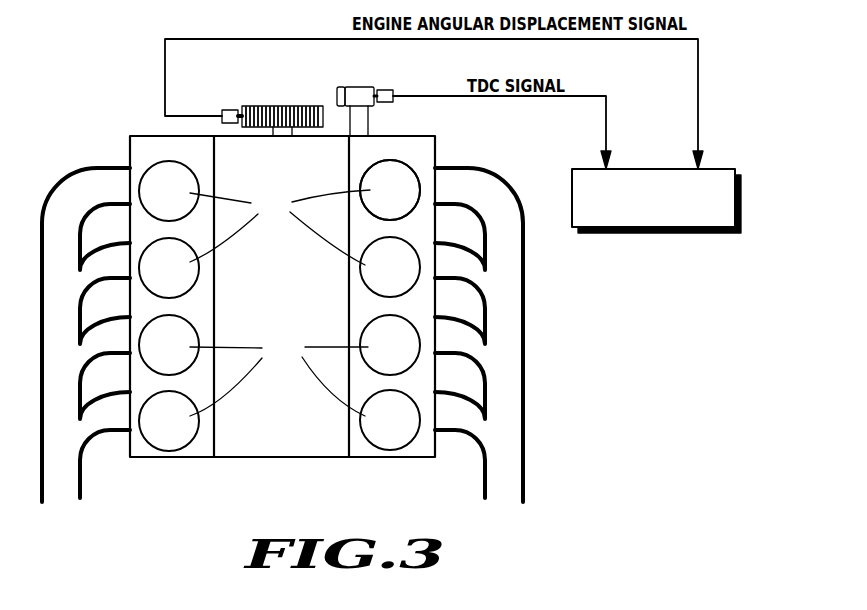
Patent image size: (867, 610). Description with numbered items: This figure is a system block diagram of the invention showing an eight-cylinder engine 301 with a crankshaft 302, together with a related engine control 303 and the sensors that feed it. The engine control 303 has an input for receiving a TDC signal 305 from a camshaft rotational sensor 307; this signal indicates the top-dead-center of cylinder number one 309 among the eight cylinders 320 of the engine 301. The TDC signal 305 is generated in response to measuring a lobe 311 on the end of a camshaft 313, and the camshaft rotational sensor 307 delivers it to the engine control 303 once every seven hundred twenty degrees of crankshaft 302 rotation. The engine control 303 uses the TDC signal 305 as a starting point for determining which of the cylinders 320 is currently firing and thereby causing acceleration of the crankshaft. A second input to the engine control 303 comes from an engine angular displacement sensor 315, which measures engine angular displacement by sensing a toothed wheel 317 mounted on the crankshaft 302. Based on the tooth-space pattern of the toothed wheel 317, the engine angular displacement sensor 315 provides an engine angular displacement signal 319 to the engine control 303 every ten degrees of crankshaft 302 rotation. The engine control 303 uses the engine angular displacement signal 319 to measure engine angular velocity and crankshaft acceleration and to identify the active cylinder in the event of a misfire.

The engine 301 is at (288, 458).
The crankshaft 302 is at (284, 137).
The engine control 303 is at (646, 234).
The TDC signal 305 is at (606, 141).
The camshaft rotational sensor 307 is at (388, 90).
The cylinder #1 309 is at (405, 173).
The lobe 311 is at (345, 88).
The camshaft 313 is at (368, 116).
The engine angular displacement sensor 315 is at (223, 110).
The toothed wheel 317 is at (274, 104).
The engine angular displacement signal 319 is at (698, 95).
The cylinders 320 is at (280, 303).